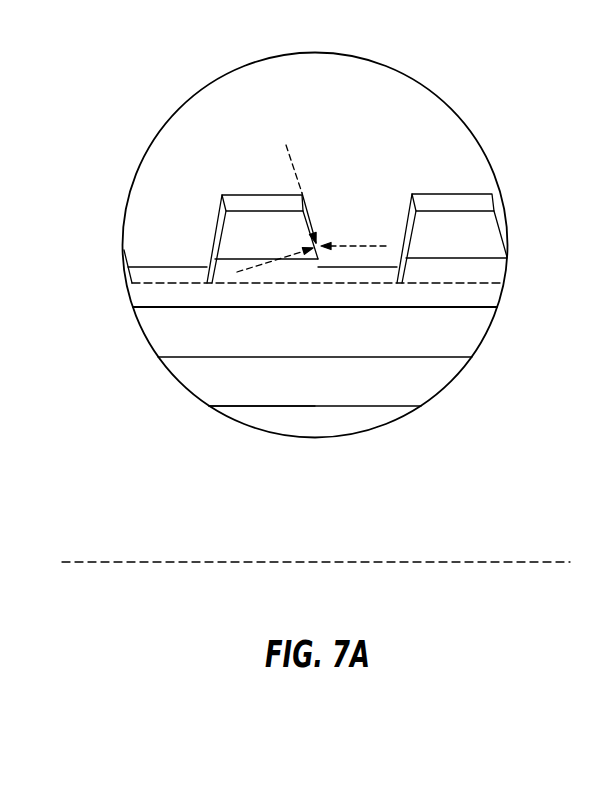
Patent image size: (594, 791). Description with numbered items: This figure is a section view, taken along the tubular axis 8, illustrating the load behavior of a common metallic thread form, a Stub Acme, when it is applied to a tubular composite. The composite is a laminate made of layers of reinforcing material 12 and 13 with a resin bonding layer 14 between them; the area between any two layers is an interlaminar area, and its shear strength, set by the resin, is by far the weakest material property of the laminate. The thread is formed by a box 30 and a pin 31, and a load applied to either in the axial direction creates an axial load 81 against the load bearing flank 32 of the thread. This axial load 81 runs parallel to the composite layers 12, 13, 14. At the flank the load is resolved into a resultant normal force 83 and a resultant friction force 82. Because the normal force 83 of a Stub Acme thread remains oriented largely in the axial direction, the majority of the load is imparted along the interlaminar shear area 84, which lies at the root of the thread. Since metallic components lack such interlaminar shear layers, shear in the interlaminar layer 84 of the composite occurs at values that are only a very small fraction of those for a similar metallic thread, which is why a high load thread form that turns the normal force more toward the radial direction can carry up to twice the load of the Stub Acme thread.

The tubular axis 8 is at (100, 562).
The reinforcing material layer 12 is at (472, 337).
The reinforcing material layer 13 is at (435, 382).
The resin bonding layer 14 is at (477, 353).
The box 30 is at (402, 97).
The pin 31 is at (198, 370).
The load bearing flank 32 is at (302, 211).
The axial load 81 is at (368, 246).
The resultant friction force 82 is at (295, 173).
The resultant normal force 83 is at (275, 260).
The interlaminar shear area 84 is at (492, 283).